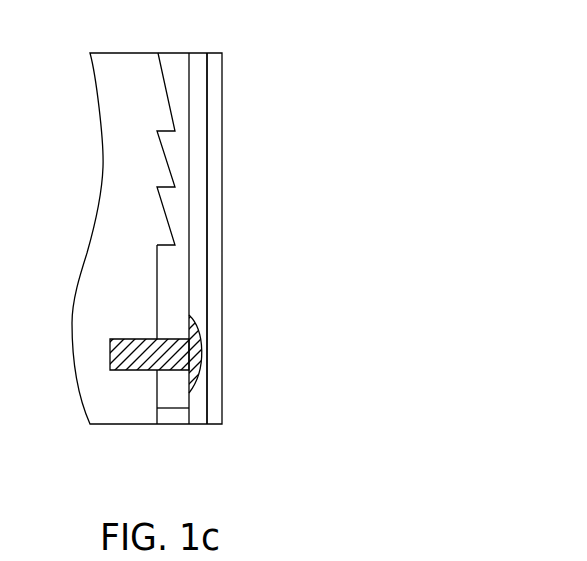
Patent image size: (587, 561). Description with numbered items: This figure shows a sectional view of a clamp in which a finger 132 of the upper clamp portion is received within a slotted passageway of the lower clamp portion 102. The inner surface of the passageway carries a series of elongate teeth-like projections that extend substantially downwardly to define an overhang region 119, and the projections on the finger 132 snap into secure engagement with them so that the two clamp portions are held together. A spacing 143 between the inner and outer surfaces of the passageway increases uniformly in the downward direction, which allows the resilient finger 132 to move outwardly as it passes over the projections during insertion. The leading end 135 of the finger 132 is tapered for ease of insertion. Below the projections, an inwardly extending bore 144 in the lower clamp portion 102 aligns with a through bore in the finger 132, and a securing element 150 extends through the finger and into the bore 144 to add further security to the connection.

The lower clamp portion 102 is at (120, 65).
The finger 132 is at (175, 63).
The overhang region 119 is at (160, 133).
The spacing 143 is at (200, 278).
The bore 144 is at (123, 372).
The securing element 150 is at (198, 353).
The leading end 135 is at (160, 400).